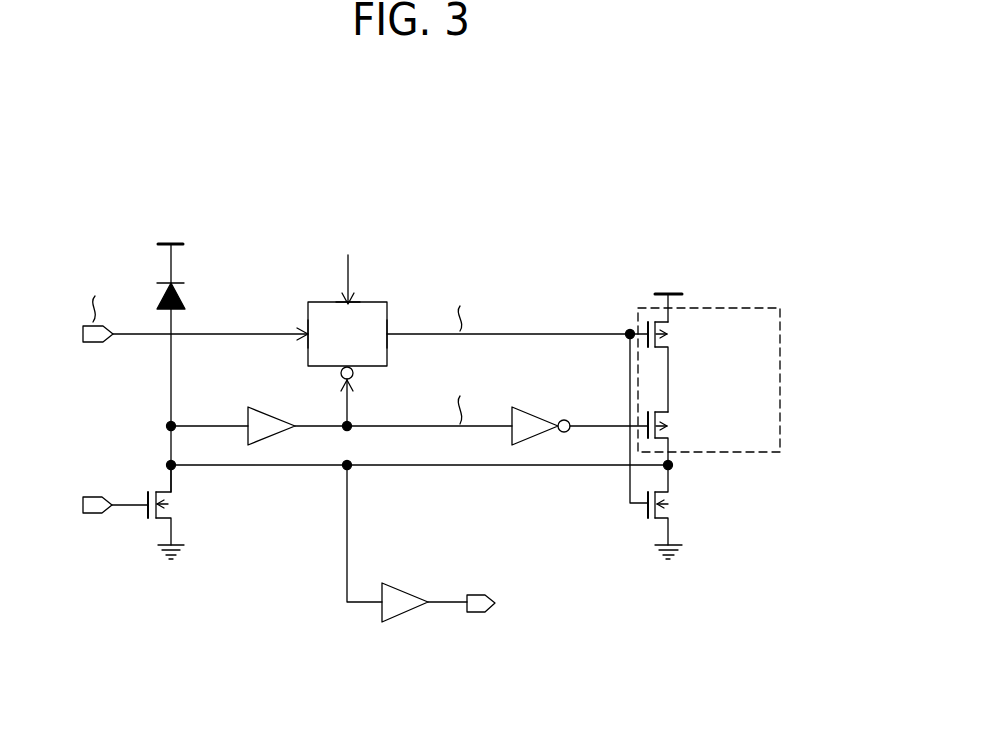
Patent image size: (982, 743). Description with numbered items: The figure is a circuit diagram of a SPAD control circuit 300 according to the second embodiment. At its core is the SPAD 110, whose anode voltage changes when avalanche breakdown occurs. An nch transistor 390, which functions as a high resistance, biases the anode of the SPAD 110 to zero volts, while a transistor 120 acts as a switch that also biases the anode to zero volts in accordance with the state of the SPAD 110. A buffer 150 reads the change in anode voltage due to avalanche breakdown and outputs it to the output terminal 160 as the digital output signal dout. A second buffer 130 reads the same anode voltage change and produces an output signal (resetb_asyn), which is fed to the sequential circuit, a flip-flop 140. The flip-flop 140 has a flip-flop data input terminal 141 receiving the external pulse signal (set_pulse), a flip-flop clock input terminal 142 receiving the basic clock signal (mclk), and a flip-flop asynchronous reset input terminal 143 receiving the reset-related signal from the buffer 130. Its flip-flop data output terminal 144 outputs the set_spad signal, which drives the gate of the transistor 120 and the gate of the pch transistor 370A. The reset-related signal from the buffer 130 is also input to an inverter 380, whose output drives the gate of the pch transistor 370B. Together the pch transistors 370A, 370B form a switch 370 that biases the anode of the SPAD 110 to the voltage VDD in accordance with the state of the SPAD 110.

The SPAD 110 is at (183, 301).
The transistor 120 is at (670, 512).
The buffer 130 is at (262, 406).
The flip-flop 140 is at (364, 302).
The flip-flop data input terminal 141 is at (306, 331).
The flip-flop clock input terminal 142 is at (343, 298).
The flip-flop asynchronous reset input terminal 143 is at (353, 377).
The flip-flop data output terminal 144 is at (388, 333).
The buffer 150 is at (398, 586).
The output terminal 160 is at (480, 596).
The SPAD control circuit 300 is at (775, 220).
The switch 370 is at (786, 336).
The pch transistor 370A is at (670, 339).
The pch transistor 370B is at (670, 432).
The inverter 380 is at (530, 404).
The nch transistor 390 is at (172, 512).